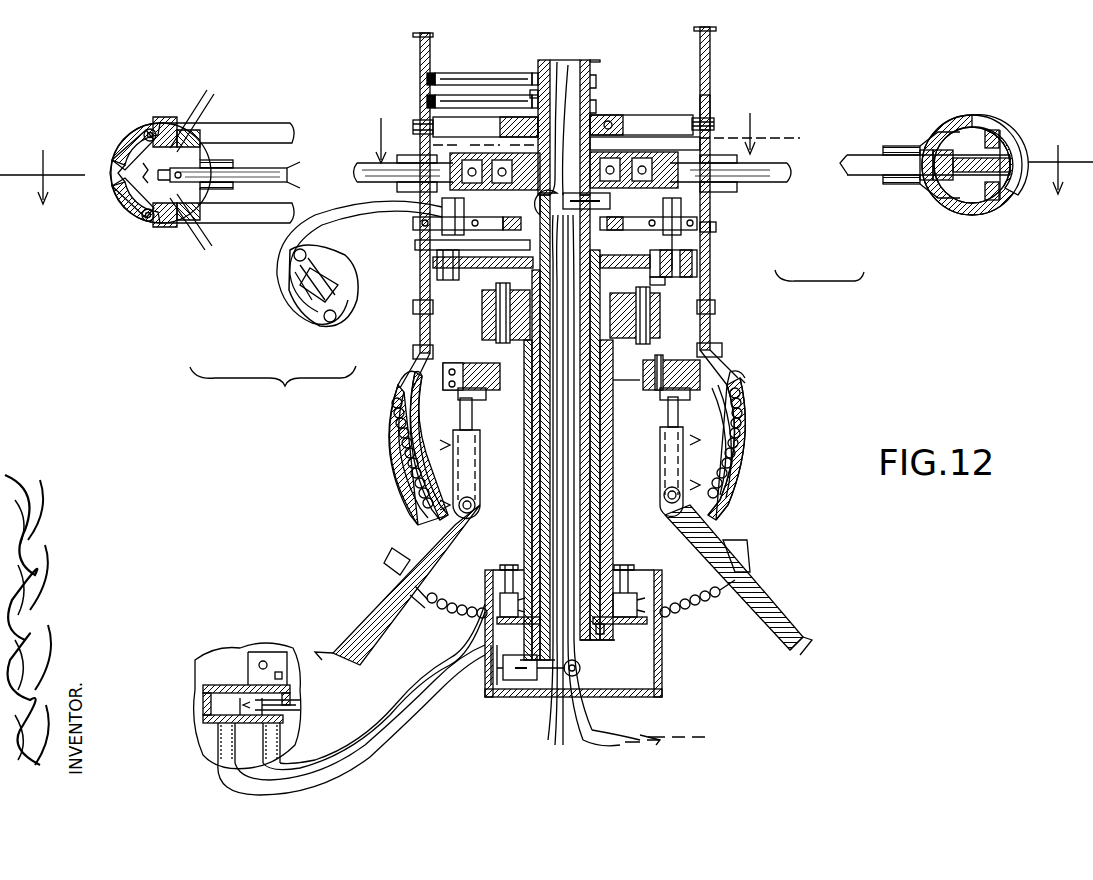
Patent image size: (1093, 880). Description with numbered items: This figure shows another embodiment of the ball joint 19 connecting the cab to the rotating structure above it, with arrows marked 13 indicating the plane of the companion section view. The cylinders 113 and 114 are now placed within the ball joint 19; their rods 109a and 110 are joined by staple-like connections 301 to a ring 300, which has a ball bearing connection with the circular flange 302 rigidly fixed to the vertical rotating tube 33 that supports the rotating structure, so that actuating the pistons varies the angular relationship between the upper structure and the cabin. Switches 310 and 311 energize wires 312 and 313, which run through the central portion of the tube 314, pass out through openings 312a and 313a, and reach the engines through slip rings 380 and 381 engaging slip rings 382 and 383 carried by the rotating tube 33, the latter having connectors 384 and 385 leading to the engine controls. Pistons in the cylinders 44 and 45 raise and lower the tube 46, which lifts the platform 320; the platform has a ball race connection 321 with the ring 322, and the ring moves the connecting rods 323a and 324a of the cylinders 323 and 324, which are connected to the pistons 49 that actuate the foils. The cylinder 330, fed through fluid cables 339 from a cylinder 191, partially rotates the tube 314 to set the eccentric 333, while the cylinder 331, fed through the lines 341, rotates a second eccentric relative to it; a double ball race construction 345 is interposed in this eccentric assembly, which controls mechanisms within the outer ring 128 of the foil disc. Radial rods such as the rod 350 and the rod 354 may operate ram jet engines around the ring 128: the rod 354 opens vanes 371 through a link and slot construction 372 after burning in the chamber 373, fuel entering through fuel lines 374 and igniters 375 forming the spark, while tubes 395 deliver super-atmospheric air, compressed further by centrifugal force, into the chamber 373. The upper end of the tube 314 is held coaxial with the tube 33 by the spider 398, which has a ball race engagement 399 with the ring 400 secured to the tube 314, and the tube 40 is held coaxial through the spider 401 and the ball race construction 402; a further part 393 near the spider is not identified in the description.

The section line 13- 13 is at (546, 158).
The ball joint 19 is at (745, 383).
The vertical tube 33 is at (712, 280).
The tube 40 is at (612, 470).
The cylinder 44 is at (493, 580).
The cylinder 45 is at (630, 585).
The tube 46 is at (600, 528).
The pistons 49 is at (292, 322).
The rod 109a is at (472, 421).
The rod 110 is at (681, 415).
The cylinder 113 is at (457, 467).
The cylinder 114 is at (750, 420).
The outer ring 128 is at (162, 118).
The cylinder 191 is at (222, 655).
The ring 300 is at (636, 396).
The staple-like connections 301 is at (662, 405).
The circular flange 302 is at (470, 385).
The switch 310 is at (675, 735).
The switch 311 is at (655, 750).
The wire 312 is at (560, 75).
The opening 312a is at (600, 630).
The wire 313 is at (632, 755).
The opening 313a is at (604, 727).
The tube 314 is at (590, 62).
The platform 320 is at (500, 276).
The ball race connection 321 is at (655, 280).
The ring 322 is at (700, 262).
The cylinder 323 is at (465, 210).
The connecting rod 323a is at (468, 248).
The cylinder 324 is at (700, 206).
The connecting rod 324a is at (716, 230).
The cylinder 330 is at (505, 695).
The cylinder 331 is at (645, 150).
The eccentric 333 is at (503, 195).
The fluid cables 339 is at (503, 668).
The lines 341 is at (552, 740).
The double ball race construction 345 is at (655, 125).
The rod 350 is at (858, 150).
The radial rod 354 is at (250, 123).
The vanes 371 is at (118, 145).
The link and slot construction 372 is at (165, 228).
The chamber 373 is at (128, 140).
The fuel lines 374 is at (205, 92).
The igniters 375 is at (115, 192).
The slip ring 380 is at (538, 72).
The slip ring 381 is at (538, 95).
The slip ring 382 is at (460, 75).
The slip ring 383 is at (448, 110).
The connector 384 is at (432, 75).
The connector 385 is at (416, 85).
The plate portion 393 is at (716, 128).
The tubes 395 is at (244, 222).
The spider 398 is at (714, 73).
The ball race engagement 399 is at (605, 160).
The ring 400 is at (598, 115).
The spider 401 is at (680, 308).
The ball race construction 402 is at (682, 366).